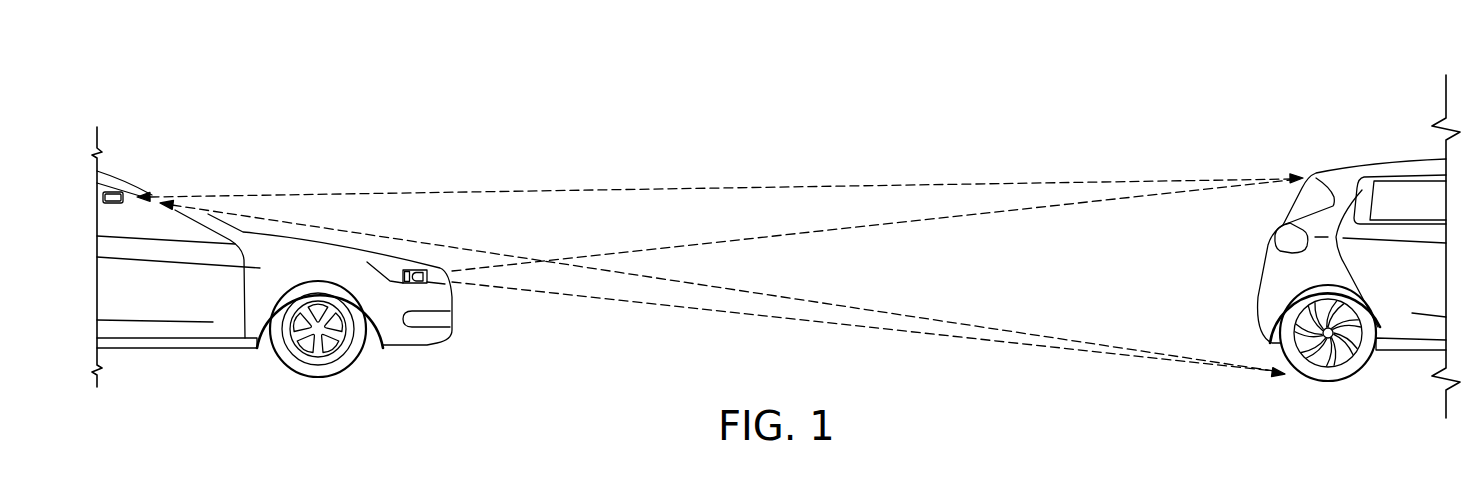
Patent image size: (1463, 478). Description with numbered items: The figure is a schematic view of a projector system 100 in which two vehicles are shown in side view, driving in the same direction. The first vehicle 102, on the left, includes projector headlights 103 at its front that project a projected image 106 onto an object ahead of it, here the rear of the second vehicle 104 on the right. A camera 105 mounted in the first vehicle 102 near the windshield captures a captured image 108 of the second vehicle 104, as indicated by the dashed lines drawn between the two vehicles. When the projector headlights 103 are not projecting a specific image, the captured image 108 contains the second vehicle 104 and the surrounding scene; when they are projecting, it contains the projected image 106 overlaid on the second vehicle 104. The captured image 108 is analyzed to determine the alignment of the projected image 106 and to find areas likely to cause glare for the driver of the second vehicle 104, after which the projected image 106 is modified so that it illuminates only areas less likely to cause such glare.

The projector system 100 is at (728, 74).
The first vehicle 102 is at (178, 350).
The projector headlights 103 is at (420, 260).
The second vehicle 104 is at (1392, 163).
The camera 105 is at (112, 191).
The projected image 106 is at (1226, 266).
The captured image 108 is at (176, 180).